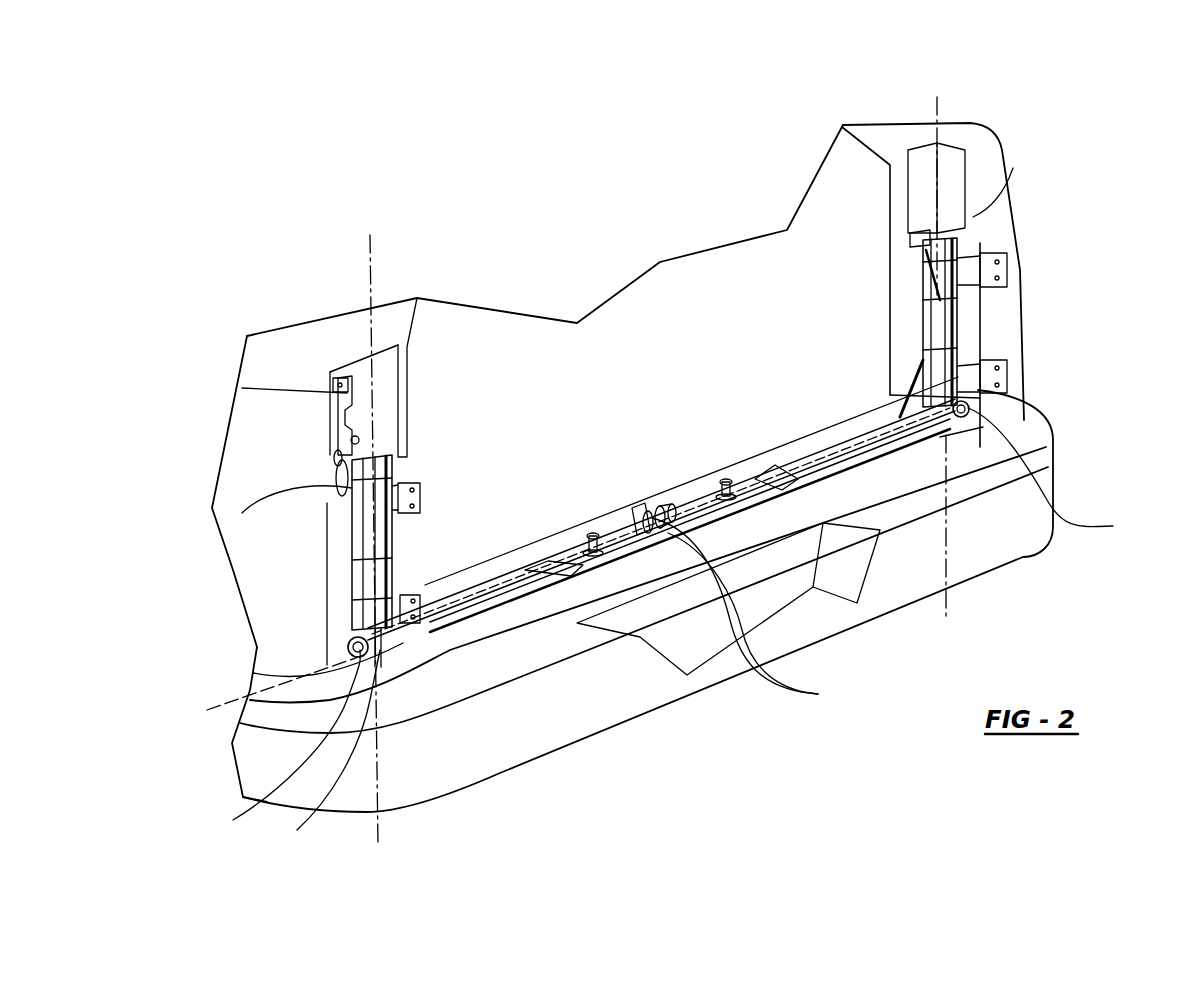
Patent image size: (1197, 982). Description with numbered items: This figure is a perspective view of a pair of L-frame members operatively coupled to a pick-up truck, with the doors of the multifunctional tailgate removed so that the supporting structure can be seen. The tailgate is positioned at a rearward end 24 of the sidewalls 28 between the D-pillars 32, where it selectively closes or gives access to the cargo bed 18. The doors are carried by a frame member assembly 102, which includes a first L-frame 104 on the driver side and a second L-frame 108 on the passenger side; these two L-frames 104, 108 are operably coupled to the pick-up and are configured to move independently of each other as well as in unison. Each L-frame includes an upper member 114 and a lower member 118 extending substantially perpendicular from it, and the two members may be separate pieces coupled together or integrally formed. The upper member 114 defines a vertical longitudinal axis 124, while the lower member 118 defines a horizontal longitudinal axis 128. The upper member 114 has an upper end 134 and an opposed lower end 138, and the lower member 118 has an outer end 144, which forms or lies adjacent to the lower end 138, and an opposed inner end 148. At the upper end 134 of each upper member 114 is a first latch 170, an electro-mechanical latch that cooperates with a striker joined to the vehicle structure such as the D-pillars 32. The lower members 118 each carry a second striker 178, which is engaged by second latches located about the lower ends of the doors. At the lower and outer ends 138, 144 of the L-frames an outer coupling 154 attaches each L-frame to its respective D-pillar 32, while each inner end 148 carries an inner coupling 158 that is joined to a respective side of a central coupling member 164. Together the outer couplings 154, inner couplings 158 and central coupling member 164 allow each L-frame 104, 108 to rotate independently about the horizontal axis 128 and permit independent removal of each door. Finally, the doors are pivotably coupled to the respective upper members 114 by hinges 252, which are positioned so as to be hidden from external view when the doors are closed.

The cargo bed 18 is at (548, 352).
The rearward end 24 is at (443, 660).
The sidewalls 28 is at (287, 428).
The D-pillars 32 is at (403, 355).
The frame member assembly 102 is at (548, 603).
The first L-frame 104 is at (548, 549).
The second L-frame 108 is at (830, 447).
The upper member 114 is at (352, 565).
The lower member 118 is at (623, 535).
The vertical longitudinal axis 124 is at (368, 288).
The horizontal longitudinal axis 128 is at (220, 710).
The upper end 134 is at (353, 378).
The lower end 138 is at (358, 636).
The outer end 144 is at (705, 629).
The inner end 148 is at (750, 614).
The outer coupling 154 is at (1143, 453).
The inner coupling 158 is at (670, 512).
The central coupling member 164 is at (643, 513).
The first latch 170 is at (403, 402).
The second striker 178 is at (593, 535).
The hinges 252 is at (420, 497).